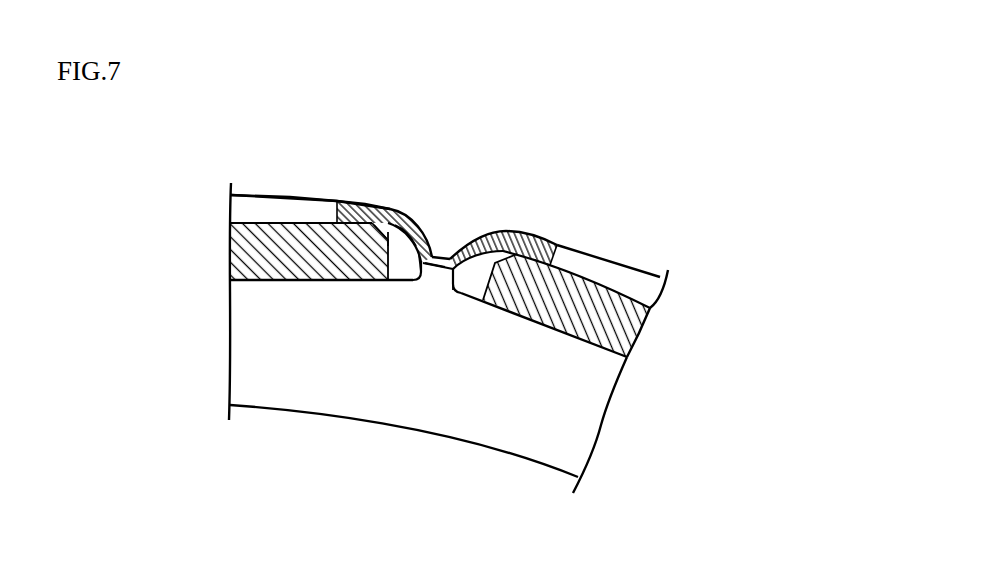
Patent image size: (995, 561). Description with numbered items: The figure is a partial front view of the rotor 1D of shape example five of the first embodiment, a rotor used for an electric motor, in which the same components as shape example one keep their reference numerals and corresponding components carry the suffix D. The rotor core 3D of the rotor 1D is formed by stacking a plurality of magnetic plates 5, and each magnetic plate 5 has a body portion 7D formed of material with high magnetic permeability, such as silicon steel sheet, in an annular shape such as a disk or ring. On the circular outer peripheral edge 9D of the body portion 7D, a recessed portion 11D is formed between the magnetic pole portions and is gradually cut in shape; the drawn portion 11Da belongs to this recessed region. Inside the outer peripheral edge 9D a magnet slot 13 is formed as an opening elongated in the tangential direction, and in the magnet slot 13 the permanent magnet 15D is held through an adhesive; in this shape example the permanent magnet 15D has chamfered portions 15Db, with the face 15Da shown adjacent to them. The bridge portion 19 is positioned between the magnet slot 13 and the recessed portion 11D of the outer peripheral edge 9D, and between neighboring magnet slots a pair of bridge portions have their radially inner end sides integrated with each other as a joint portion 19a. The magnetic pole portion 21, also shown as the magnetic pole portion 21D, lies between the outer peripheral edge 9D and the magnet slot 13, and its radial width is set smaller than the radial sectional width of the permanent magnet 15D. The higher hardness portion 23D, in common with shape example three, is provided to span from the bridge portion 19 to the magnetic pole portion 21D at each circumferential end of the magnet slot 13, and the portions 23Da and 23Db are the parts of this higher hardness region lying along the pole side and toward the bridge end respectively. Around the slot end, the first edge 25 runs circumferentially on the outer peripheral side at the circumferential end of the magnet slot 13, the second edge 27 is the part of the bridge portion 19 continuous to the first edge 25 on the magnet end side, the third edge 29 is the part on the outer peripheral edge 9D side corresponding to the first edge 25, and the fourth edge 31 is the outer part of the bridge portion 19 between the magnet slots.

The rotor 1D is at (503, 140).
The rotor core 3D is at (521, 193).
The magnetic plate 5 is at (585, 415).
The body portion 7D is at (560, 435).
The outer peripheral edge 9D is at (288, 195).
The recessed portion 11D is at (457, 262).
The boundary portion 11Da is at (337, 200).
The magnet slot 13 is at (271, 281).
The permanent magnet 15D is at (262, 252).
The inclined surface of rib 15Da is at (394, 234).
The chamfered portion 15Db is at (382, 242).
The bridge portion 19 is at (429, 248).
The joint portion 19a is at (442, 268).
The magnetic pole portion 21 is at (626, 272).
The magnetic pole portion 21D is at (268, 202).
The higher hardness portion 23D is at (390, 210).
The inner layer flat portion 23Da is at (320, 208).
The inner layer end portion 23Db is at (437, 262).
The first edge 25 is at (407, 228).
The second edge 27 is at (418, 267).
The third edge 29 is at (372, 205).
The fourth edge 31 is at (410, 222).